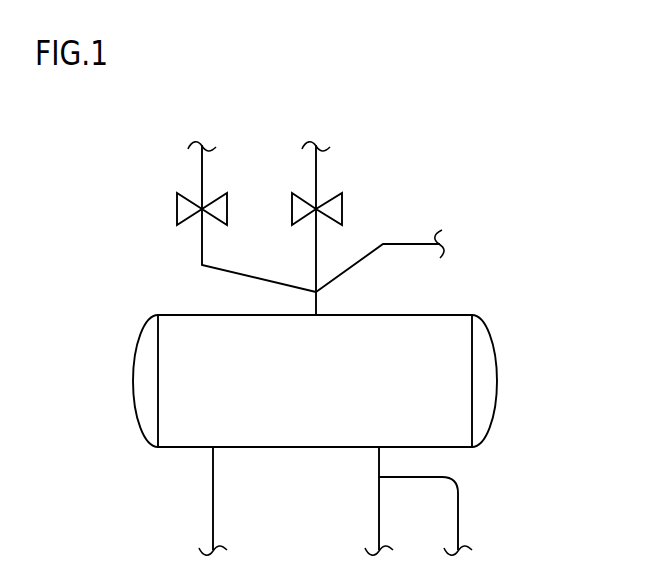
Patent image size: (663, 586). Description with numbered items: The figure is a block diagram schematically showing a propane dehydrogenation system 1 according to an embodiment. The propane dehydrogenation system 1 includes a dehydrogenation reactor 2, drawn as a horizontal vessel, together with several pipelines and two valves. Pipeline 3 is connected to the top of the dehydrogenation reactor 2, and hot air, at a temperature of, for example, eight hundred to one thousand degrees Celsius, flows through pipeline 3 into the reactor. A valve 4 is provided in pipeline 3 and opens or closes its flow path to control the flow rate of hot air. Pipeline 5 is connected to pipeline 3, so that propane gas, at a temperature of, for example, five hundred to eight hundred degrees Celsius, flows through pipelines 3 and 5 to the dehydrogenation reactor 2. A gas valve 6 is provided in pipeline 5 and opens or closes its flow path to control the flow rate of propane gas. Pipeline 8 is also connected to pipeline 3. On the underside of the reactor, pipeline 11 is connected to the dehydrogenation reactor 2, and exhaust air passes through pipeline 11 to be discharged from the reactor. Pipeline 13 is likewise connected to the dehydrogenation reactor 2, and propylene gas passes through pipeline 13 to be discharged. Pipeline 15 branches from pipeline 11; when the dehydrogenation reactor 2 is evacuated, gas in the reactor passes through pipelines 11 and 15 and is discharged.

The propane dehydrogenation system 1 is at (574, 129).
The dehydrogenation reactor 2 is at (497, 380).
The pipeline 3 is at (320, 172).
The valve 4 is at (292, 209).
The pipeline 5 is at (200, 172).
The gas valve 6 is at (177, 209).
The pipeline 8 is at (411, 244).
The pipeline 11 is at (377, 503).
The pipeline 13 is at (215, 503).
The pipeline 15 is at (460, 508).